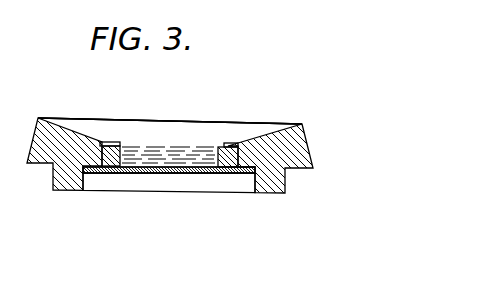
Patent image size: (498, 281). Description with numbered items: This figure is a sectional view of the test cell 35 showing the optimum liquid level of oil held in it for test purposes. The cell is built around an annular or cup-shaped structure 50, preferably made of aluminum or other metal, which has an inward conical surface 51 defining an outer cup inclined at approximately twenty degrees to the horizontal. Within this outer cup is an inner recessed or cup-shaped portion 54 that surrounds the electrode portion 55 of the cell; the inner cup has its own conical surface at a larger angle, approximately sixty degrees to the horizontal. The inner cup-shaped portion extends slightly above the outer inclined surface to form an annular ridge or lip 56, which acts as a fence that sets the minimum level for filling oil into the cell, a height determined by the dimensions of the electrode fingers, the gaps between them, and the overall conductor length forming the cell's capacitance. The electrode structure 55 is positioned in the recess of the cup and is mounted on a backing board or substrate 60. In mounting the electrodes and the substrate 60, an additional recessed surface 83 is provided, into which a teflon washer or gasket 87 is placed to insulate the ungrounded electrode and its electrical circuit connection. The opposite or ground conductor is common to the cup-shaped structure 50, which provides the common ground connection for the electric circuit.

The test cell 35 is at (311, 115).
The cup-shaped structure 50 is at (313, 148).
The inward conical surface 51 is at (276, 124).
The inner recessed cup-shaped portion 54 is at (207, 144).
The electrode portion 55 is at (158, 167).
The annular ridge or lip 56 is at (230, 144).
The backing board 60 is at (193, 174).
The recessed surface 83 is at (103, 143).
The teflon washer or gasket 87 is at (117, 171).